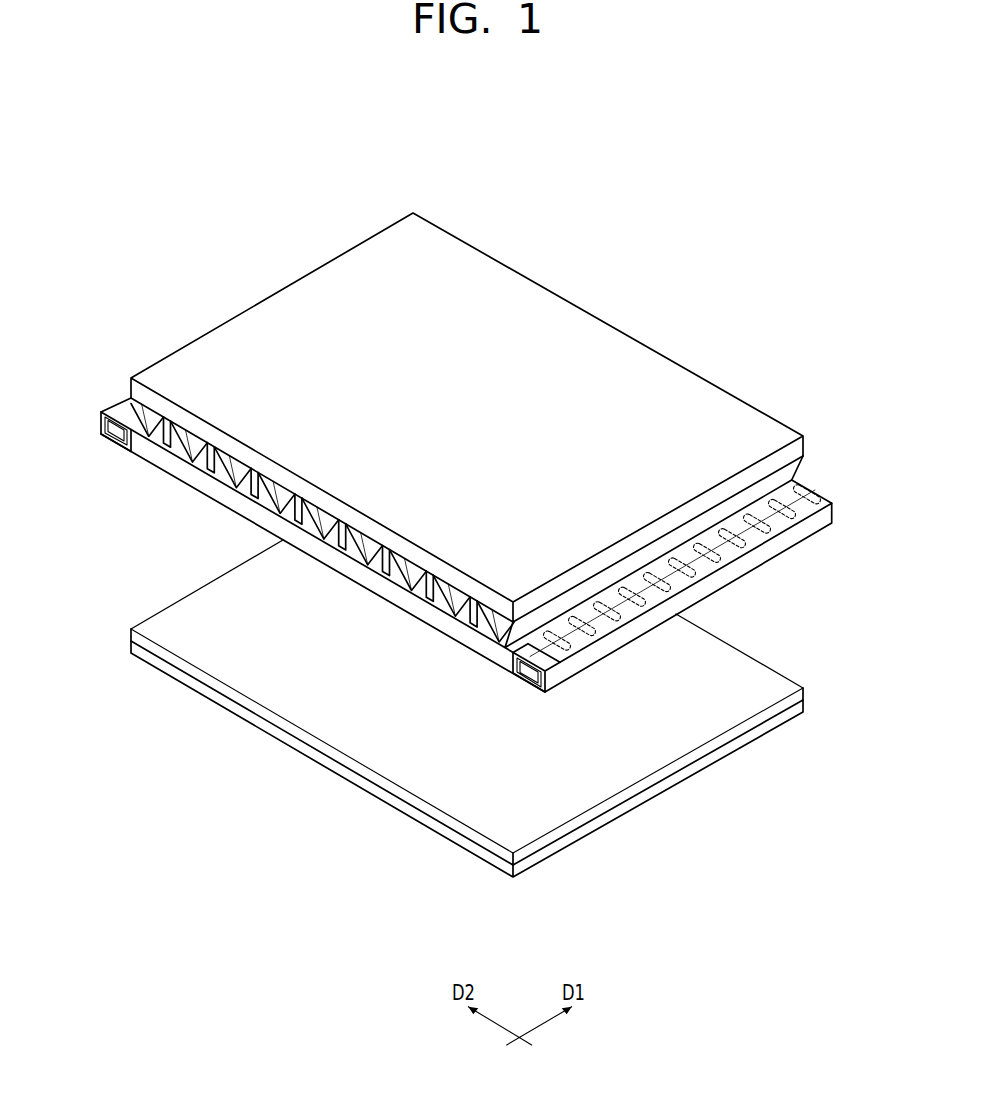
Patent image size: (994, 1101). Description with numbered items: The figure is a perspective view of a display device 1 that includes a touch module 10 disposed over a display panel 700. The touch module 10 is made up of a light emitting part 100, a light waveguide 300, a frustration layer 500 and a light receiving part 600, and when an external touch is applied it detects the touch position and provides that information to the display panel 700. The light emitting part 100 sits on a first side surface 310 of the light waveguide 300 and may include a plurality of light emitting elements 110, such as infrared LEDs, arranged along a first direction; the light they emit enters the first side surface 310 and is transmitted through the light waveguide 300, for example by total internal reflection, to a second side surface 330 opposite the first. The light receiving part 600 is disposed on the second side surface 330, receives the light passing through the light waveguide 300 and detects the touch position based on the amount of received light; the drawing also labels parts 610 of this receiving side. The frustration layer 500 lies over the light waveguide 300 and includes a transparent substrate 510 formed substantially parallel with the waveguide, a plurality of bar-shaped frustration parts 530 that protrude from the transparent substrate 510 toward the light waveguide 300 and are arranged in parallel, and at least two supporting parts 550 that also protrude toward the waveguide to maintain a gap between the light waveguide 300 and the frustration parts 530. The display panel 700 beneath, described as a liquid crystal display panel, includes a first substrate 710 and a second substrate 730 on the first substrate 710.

The display device 1 is at (473, 136).
The touch module 10 is at (835, 433).
The light emitting part 100 is at (118, 403).
The light emitting elements 110 is at (103, 427).
The light waveguide 300 is at (205, 483).
The first side surface 310 is at (118, 443).
The second side surface 330 is at (513, 665).
The frustration layer 500 is at (390, 713).
The transparent substrate 510 is at (405, 556).
The frustration parts 530 is at (432, 597).
The supporting parts 550 is at (460, 608).
The light receiving part 600 is at (705, 592).
The light sources 610 is at (627, 633).
The display panel 700 is at (227, 783).
The first substrate 710 is at (278, 733).
The second substrate 730 is at (215, 688).